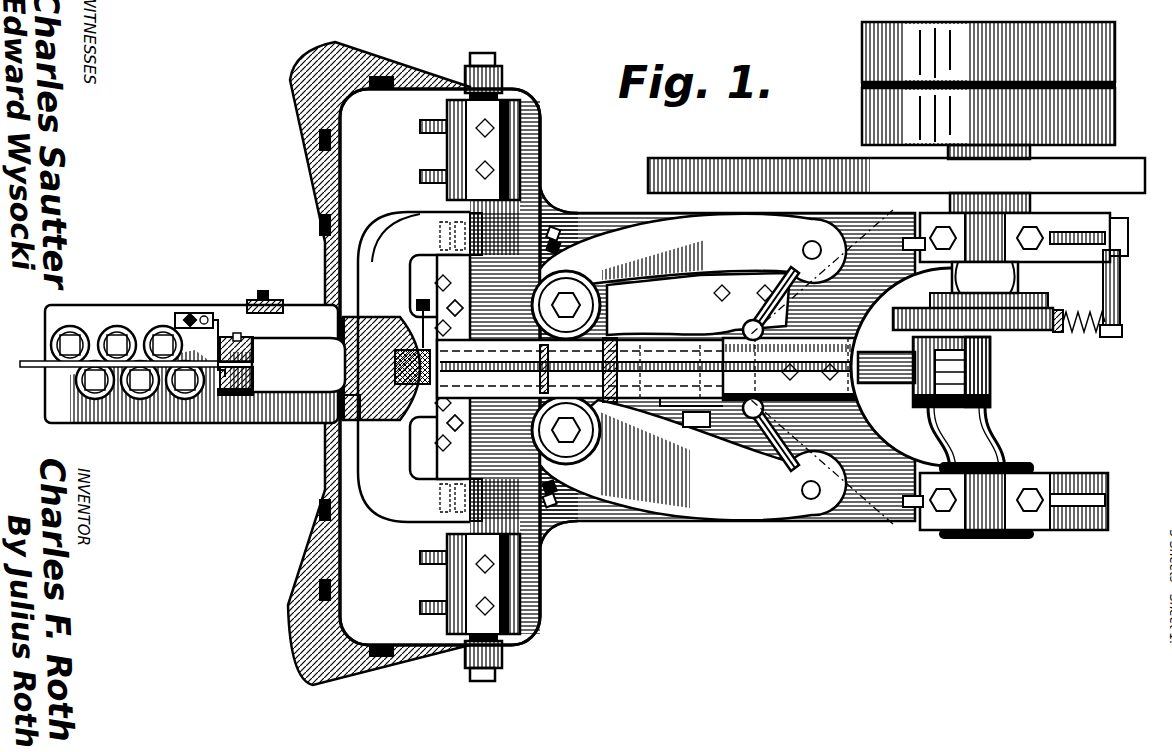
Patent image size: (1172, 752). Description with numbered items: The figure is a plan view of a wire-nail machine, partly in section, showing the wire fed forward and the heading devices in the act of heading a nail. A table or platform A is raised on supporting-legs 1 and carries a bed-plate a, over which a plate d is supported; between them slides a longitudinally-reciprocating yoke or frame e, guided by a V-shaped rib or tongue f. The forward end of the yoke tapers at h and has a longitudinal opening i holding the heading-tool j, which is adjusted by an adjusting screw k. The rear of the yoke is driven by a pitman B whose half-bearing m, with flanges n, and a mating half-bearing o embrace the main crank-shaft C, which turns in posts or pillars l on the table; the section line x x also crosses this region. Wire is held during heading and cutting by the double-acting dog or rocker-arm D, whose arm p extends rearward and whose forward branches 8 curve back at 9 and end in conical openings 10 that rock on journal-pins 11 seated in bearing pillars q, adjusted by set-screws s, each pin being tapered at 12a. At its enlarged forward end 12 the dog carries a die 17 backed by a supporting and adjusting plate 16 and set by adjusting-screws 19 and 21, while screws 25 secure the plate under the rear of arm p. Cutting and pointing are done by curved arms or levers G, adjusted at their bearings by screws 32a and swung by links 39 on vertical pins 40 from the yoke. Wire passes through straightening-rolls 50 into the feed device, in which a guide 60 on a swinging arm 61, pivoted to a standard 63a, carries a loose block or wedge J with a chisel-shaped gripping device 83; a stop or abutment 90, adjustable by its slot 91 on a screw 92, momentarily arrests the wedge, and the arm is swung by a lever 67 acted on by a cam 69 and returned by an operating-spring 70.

The supporting-legs 1 is at (385, 80).
The table or platform A is at (627, 367).
The rearwardly curved portions of lateral branches 9 is at (378, 248).
The double-acting dog or rocker-arm D is at (398, 236).
The branches 8 is at (438, 368).
The transverse opening or bearing 10 is at (472, 246).
The tapering forward end h is at (468, 400).
The longitudinal opening i is at (468, 338).
The heading-tool j is at (478, 333).
The supporting and adjusting plate 16 is at (381, 368).
The die 17 is at (386, 368).
The adjusting-screws 21 is at (433, 316).
The adjusting-screws 19 is at (328, 356).
The enlarged portion 12 is at (343, 420).
The journal or pin 11 is at (500, 94).
The set-screws s is at (490, 128).
The bearing post or pillar q is at (520, 142).
The tapered or conical portion of journal-pin 12a is at (548, 190).
The adjusting-screws 32a is at (556, 228).
The curved arms or levers G is at (647, 234).
The plate d is at (698, 304).
The adjusting device or screw k is at (572, 368).
The longitudinally-reciprocating yoke or frame e is at (646, 371).
The V-shaped rib or tongue f is at (694, 371).
The bed-plate a is at (683, 418).
The arm p is at (790, 369).
The link 39 is at (800, 290).
The section line x x is at (828, 375).
The vertical pins or pivots 40 is at (812, 250).
The pitman B is at (855, 414).
The posts or pillars l is at (937, 220).
The cam or tappet 69 is at (895, 320).
The screws 25 is at (856, 356).
The half-bearing m is at (918, 407).
The flanges n is at (932, 412).
The half-bearing o is at (992, 401).
The main crank-shaft C is at (1013, 444).
The lever 67 is at (1066, 328).
The operating-spring 70 is at (1105, 336).
The straightening-rolls 50 is at (86, 395).
The block or wedge J is at (298, 365).
The gripping device 83 is at (250, 332).
The guide 60 is at (253, 378).
The swinging arm 61 is at (250, 394).
The slot 91 is at (175, 320).
The screw 92 is at (188, 313).
The stop or abutment 90 is at (218, 314).
The standard or upright 63a is at (262, 298).